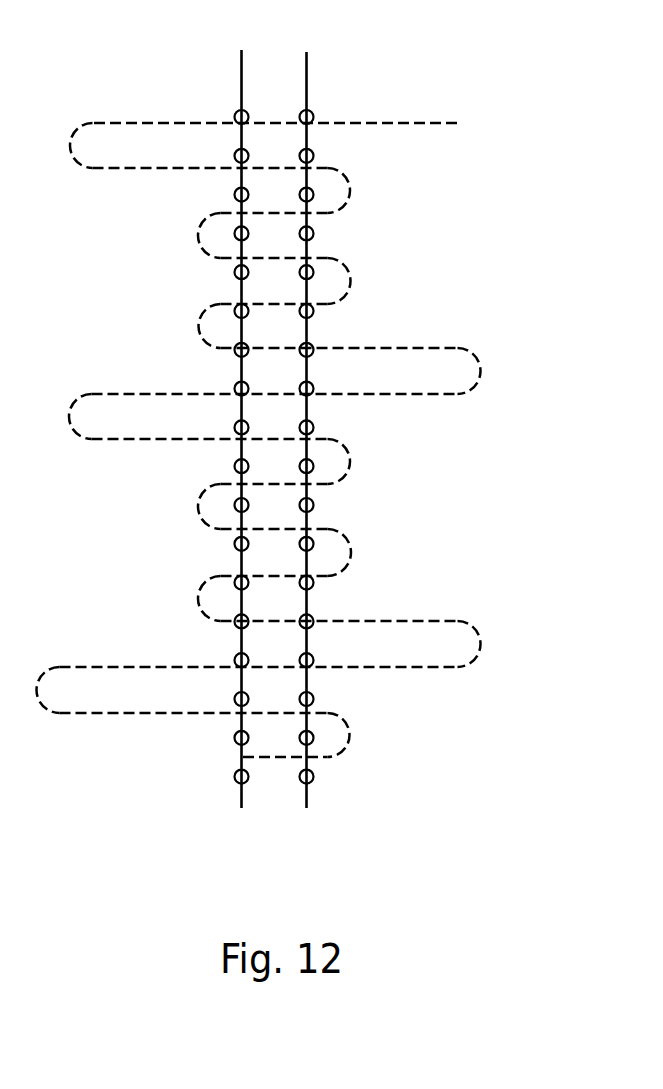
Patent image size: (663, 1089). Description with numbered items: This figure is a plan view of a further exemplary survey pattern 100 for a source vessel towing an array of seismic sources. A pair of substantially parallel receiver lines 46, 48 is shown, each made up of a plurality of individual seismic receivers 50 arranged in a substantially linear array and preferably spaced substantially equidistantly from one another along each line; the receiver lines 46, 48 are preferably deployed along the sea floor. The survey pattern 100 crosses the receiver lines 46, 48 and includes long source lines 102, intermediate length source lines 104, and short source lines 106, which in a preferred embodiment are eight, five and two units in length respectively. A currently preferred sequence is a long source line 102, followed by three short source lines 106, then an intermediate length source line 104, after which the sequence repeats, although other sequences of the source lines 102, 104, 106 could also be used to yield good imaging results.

The survey pattern 100 is at (421, 60).
The receiver line 46 is at (241, 72).
The receiver line 48 is at (307, 73).
The seismic receivers 50 is at (227, 305).
The long source line 102 is at (362, 123).
The intermediate length source line 104 is at (138, 170).
The short source line 106 is at (280, 213).